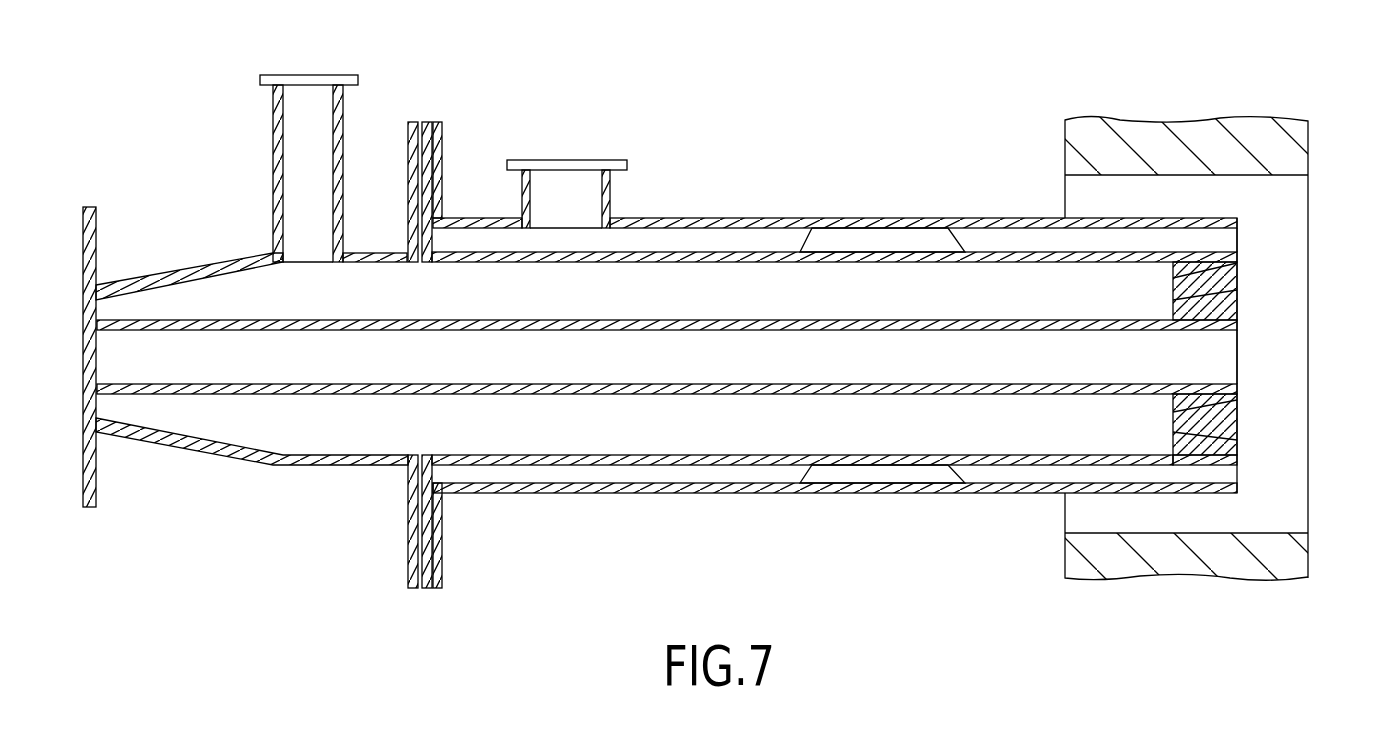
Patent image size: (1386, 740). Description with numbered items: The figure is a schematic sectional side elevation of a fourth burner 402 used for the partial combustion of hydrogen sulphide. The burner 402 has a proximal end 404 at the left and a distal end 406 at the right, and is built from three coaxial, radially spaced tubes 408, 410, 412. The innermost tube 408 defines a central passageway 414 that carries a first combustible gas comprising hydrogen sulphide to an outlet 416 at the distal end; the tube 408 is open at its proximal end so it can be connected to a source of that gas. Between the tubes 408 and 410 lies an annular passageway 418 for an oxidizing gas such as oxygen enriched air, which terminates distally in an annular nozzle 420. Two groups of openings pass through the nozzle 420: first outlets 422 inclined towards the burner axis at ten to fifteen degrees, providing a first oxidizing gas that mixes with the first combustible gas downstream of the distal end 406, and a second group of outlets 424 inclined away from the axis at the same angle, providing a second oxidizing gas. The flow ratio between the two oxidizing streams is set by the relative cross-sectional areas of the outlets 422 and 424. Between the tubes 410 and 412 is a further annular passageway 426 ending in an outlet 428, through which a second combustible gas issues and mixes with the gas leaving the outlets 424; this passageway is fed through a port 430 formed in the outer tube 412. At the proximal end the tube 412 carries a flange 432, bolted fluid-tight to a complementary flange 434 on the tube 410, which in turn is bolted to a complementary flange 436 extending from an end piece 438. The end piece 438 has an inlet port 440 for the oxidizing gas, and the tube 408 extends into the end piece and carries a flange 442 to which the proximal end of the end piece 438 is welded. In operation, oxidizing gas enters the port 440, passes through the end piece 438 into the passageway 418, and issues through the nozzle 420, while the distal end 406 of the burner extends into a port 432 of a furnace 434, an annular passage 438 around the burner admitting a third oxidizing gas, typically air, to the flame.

The burner 402 is at (707, 505).
The proximal end 404 is at (128, 491).
The distal end 406 is at (1262, 345).
The tube 408 is at (683, 319).
The tube 410 is at (755, 247).
The tube 412 is at (946, 215).
The passageway 414 is at (723, 364).
The outlet 416 is at (1243, 365).
The annular passageway 418 is at (993, 303).
The annular nozzle 420 is at (1242, 287).
The first outlets 422 is at (1243, 402).
The second group of outlets 424 is at (1243, 438).
The annular passageway 426 is at (575, 472).
The outlet 428 is at (1228, 238).
The port 430 is at (562, 183).
The flange 432 is at (442, 568).
The flange 434 is at (433, 238).
The complementary flange 436 is at (408, 566).
The end piece 438 is at (1177, 190).
The inlet port 440 is at (273, 156).
The flange 442 is at (97, 243).